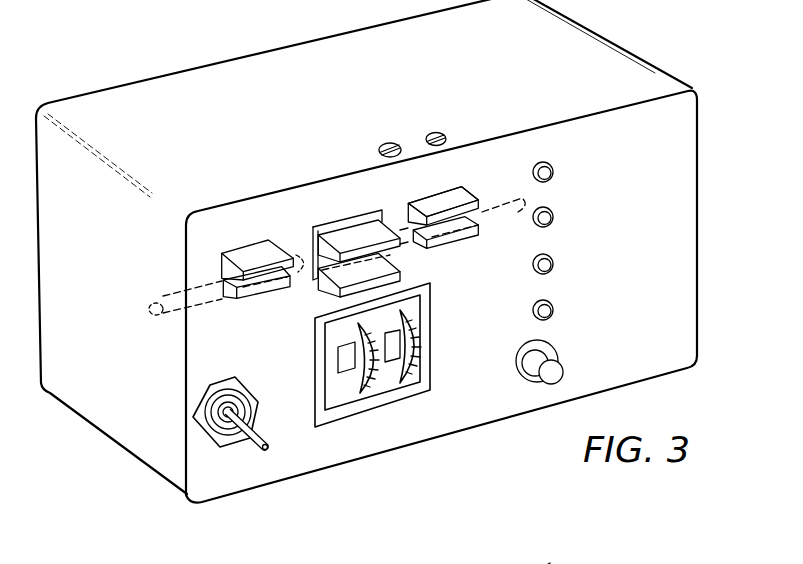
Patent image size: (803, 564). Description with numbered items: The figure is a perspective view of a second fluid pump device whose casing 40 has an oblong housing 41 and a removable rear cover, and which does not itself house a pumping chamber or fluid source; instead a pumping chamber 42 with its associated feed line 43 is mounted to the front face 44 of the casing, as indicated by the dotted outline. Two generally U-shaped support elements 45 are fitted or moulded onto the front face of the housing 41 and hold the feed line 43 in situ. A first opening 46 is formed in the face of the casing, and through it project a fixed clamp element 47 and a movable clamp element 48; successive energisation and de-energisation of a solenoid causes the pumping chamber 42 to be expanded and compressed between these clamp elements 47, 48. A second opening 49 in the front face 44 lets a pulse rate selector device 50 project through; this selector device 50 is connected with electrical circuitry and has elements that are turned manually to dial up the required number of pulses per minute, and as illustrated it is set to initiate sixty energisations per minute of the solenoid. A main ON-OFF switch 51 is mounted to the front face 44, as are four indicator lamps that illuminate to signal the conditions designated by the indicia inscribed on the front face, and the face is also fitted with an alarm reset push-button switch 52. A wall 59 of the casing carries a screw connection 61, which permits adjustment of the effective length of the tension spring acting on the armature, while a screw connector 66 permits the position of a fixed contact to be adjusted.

The casing 40 is at (128, 473).
The oblong housing 41 is at (108, 405).
The pumping chamber 42 is at (382, 220).
The feed line 43 is at (160, 296).
The front face 44 is at (467, 418).
The U-shaped support elements 45 is at (250, 242).
The first opening 46 is at (382, 212).
The fixed clamp element 47 is at (353, 233).
The movable clamp element 48 is at (400, 278).
The second opening 49 is at (428, 370).
The pulse rate selector device 50 is at (379, 396).
The main ON-OFF switch 51 is at (270, 428).
The alarm reset switch 52 is at (560, 385).
The casing wall 59 is at (550, 563).
The screw connection 61 is at (443, 132).
The screw connector 66 is at (390, 143).